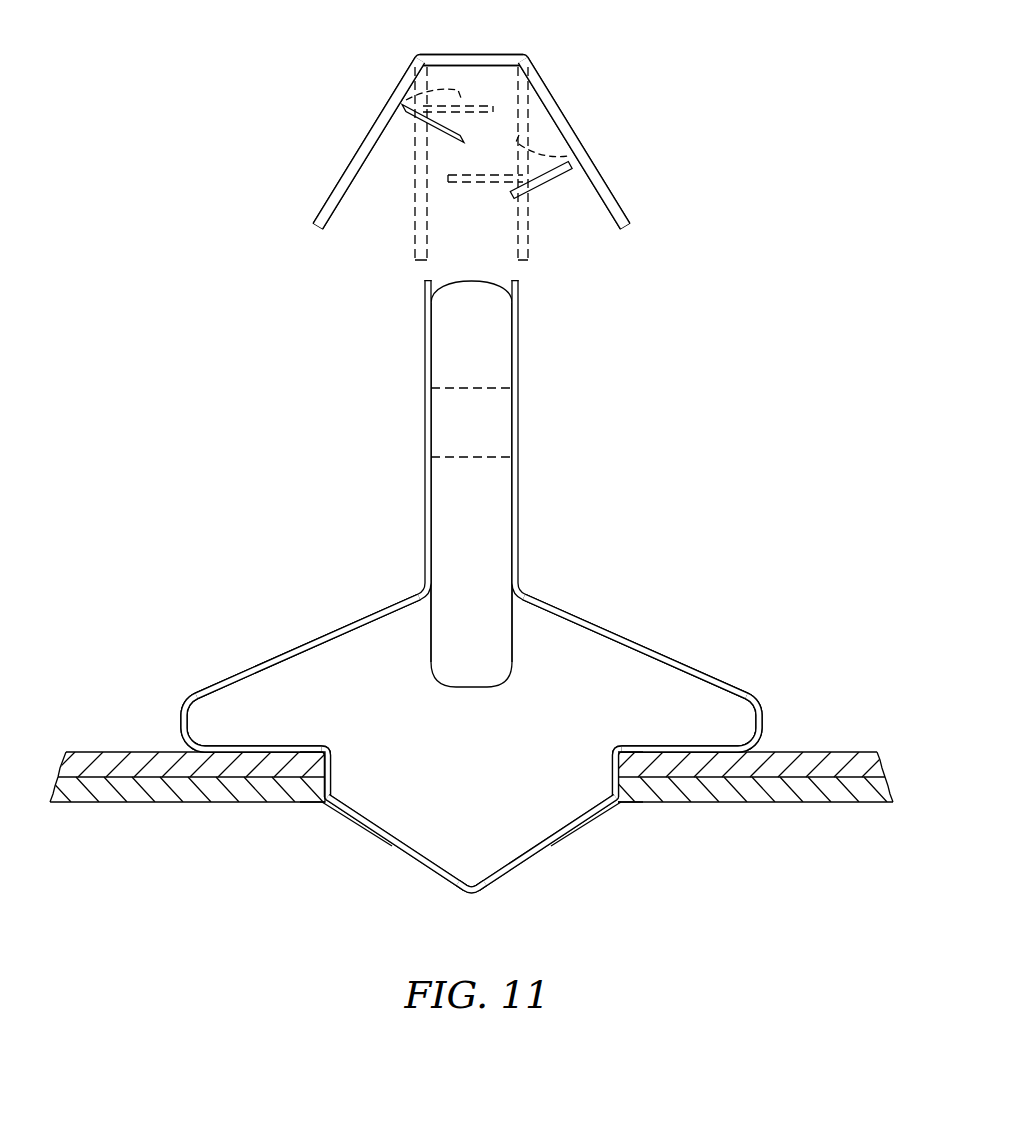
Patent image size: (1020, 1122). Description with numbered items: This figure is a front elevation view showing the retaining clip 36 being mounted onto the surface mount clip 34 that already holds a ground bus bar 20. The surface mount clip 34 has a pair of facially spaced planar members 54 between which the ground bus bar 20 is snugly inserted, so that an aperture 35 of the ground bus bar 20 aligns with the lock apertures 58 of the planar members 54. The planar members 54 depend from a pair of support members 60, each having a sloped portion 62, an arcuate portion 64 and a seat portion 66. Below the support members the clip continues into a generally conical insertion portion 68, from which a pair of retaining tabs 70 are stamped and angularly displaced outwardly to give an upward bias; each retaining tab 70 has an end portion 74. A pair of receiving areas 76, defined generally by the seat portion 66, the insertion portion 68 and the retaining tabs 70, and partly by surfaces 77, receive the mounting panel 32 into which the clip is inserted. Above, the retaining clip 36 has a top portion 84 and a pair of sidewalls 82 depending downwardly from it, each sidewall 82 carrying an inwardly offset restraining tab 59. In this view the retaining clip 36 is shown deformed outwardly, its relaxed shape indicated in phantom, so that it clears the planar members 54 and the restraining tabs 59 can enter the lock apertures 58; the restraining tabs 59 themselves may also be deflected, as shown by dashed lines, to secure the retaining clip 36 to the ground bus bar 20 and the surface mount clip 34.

The ground bus bar 20 is at (512, 333).
The panel 32 is at (860, 752).
The surface mount clip 34 is at (618, 479).
The aperture 35 is at (447, 413).
The retaining clip 36 is at (325, 42).
The planar member 54 is at (425, 301).
The lock aperture 58 is at (424, 444).
The restraining tab 59 is at (438, 133).
The support member 60 is at (222, 680).
The sloped portion 62 is at (310, 643).
The arcuate portion 64 is at (181, 729).
The seat portion 66 is at (226, 746).
The insertion portion 68 is at (470, 907).
The retaining tab 70 is at (345, 818).
The end portion 74 is at (321, 802).
The receiving area 76 is at (306, 766).
The surface 77 is at (318, 762).
The sidewall 82 is at (353, 159).
The top portion 84 is at (477, 54).